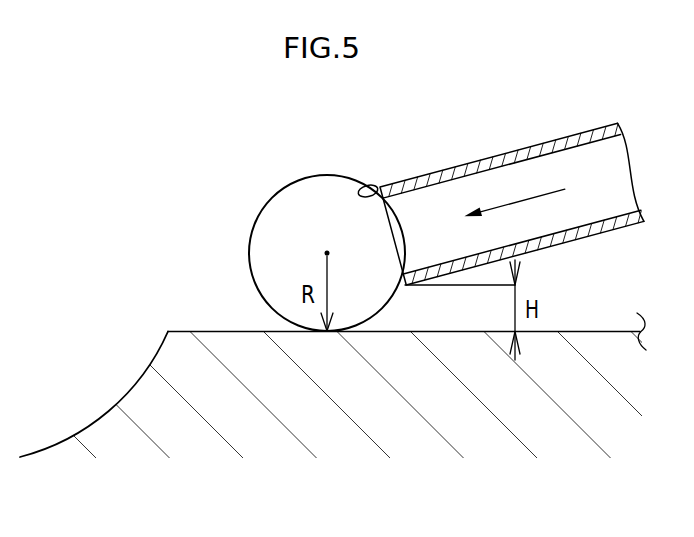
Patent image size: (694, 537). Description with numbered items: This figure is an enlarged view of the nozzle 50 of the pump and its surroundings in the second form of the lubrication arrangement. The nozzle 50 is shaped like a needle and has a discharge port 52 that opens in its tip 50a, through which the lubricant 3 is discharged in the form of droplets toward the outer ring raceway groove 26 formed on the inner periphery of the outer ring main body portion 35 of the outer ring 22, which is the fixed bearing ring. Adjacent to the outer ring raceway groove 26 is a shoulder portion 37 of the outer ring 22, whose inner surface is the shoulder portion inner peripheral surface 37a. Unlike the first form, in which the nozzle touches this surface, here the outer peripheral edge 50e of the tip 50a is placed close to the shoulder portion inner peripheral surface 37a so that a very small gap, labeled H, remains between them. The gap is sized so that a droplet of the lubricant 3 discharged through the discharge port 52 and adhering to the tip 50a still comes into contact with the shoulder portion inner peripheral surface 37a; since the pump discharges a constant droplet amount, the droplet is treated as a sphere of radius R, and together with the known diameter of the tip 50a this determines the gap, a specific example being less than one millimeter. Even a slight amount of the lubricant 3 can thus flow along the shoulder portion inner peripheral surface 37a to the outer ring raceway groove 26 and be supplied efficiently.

The lubricant 3 is at (288, 211).
The outer ring 22 is at (347, 426).
The outer ring main body portion 35 is at (267, 377).
The outer ring raceway groove 26 is at (127, 385).
The shoulder portion 37 is at (397, 357).
The shoulder portion inner peripheral surface 37a is at (211, 331).
The nozzle 50 is at (577, 240).
The tip 50a is at (372, 186).
The outer peripheral edge 50e is at (405, 285).
The discharge port 52 is at (402, 273).